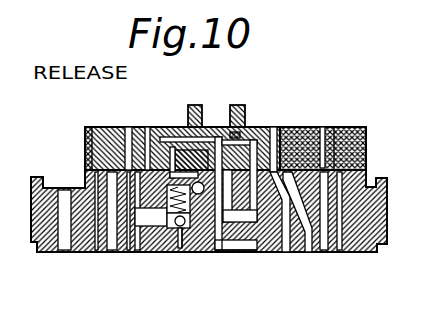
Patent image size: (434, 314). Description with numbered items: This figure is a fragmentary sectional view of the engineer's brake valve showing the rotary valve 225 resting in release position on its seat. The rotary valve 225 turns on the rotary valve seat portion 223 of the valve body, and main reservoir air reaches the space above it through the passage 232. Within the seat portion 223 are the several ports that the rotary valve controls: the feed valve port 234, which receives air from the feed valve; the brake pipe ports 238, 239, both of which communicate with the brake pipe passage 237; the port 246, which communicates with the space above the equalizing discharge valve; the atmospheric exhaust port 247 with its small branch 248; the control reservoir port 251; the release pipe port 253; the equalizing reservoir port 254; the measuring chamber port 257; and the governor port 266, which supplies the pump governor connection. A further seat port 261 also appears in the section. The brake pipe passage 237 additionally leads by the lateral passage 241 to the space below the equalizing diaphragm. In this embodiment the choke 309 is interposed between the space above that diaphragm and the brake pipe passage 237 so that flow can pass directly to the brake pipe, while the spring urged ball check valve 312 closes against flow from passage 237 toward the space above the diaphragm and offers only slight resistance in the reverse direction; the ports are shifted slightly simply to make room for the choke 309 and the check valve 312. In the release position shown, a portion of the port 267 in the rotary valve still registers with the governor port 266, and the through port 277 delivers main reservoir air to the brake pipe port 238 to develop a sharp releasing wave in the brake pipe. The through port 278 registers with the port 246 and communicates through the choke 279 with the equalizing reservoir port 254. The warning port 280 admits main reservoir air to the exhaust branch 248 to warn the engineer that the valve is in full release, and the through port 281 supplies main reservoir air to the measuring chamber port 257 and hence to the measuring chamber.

The rotary valve seat portion 223 is at (387, 193).
The rotary valve 225 is at (85, 140).
The passage 232 is at (62, 253).
The feed valve port 234 is at (108, 253).
The brake pipe passage 237 is at (128, 253).
The brake pipe port 238 is at (105, 182).
The port 239 is at (143, 127).
The lateral passage 241 is at (174, 221).
The port 246 is at (218, 252).
The atmospheric exhaust port 247 is at (214, 127).
The exhaust branch 248 is at (205, 101).
The control reservoir port 251 is at (273, 130).
The release pipe port 253 is at (301, 140).
The equalizing reservoir port 254 is at (272, 253).
The measuring chamber port 257 is at (349, 128).
The passage 261 is at (372, 140).
The governor port 266 is at (93, 253).
The port 267 is at (88, 127).
The through port 277 is at (128, 128).
The through port 278 is at (175, 137).
The choke 279 is at (245, 128).
The warning port 280 is at (279, 127).
The through port 281 is at (334, 127).
The choke 309 is at (185, 253).
The spring urged ball check valve 312 is at (168, 253).